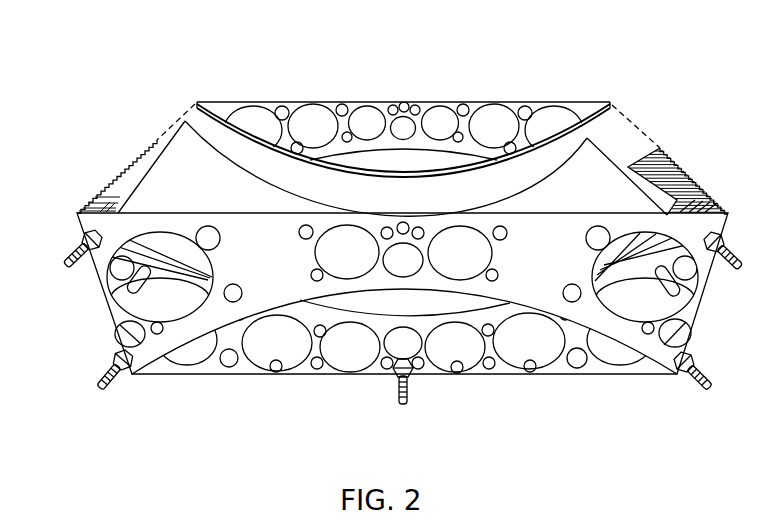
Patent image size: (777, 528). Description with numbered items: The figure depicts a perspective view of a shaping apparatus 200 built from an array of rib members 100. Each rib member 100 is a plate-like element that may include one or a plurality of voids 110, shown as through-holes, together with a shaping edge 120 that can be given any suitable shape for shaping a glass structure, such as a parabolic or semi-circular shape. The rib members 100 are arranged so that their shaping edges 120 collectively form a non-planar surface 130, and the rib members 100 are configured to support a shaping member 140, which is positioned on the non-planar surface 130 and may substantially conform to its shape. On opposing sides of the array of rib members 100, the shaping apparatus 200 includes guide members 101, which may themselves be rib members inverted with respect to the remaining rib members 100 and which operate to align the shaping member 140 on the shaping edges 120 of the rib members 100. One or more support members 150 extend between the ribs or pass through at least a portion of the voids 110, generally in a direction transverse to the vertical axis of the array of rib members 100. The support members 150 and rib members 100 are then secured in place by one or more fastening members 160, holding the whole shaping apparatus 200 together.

The shaping apparatus 200 is at (519, 74).
The rib member 100 is at (385, 303).
The guide member 101 is at (193, 335).
The voids 110 is at (312, 366).
The shaping edge 120 is at (148, 250).
The non-planar surface 130 is at (642, 148).
The shaping member 140 is at (586, 199).
The support member 150 is at (128, 292).
The fastening member 160 is at (84, 237).